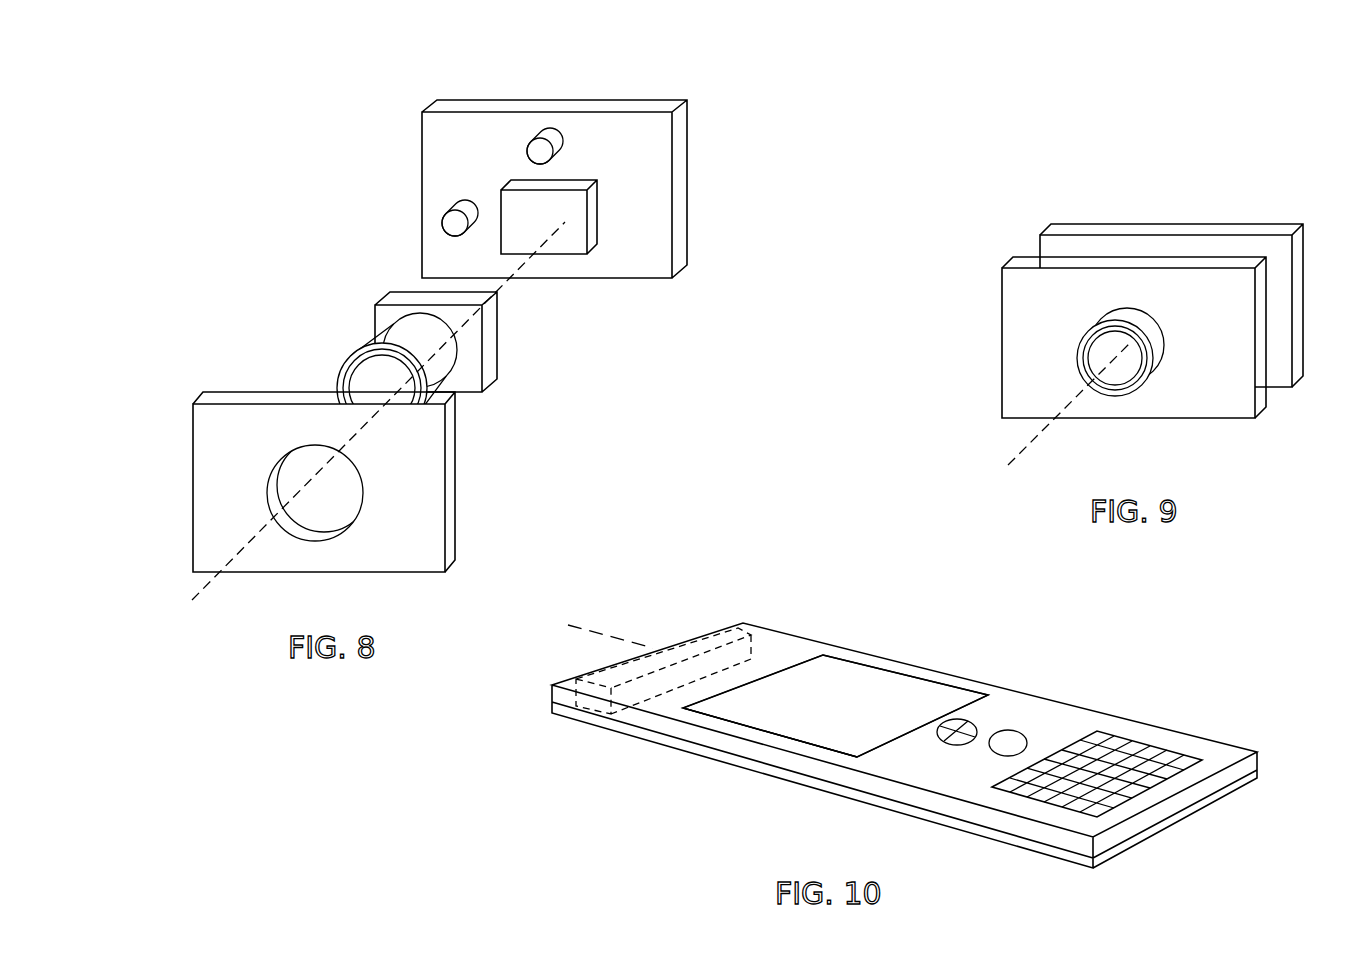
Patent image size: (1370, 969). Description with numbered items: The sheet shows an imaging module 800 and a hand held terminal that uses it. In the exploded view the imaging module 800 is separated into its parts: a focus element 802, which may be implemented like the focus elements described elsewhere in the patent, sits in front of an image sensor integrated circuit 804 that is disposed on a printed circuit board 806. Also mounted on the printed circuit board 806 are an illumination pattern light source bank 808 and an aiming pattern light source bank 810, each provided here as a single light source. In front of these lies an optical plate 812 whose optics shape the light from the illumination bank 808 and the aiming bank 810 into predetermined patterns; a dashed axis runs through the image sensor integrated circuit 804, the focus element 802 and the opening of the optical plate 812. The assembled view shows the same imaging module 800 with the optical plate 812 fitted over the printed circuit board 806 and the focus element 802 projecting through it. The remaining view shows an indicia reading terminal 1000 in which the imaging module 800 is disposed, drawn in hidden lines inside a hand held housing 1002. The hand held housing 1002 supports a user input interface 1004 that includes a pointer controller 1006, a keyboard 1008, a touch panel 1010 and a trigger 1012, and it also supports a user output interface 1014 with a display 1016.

In FIG. 8, the imaging module 800 is at (681, 63).
In FIG. 9, the imaging module 800 is at (1217, 166).
In FIG. 10, the imaging module 800 is at (706, 642).
In FIG. 8, the focus element 802 is at (318, 314).
In FIG. 9, the focus element 802 is at (1134, 404).
In FIG. 8, the image sensor integrated circuit 804 is at (594, 240).
In FIG. 8, the printed circuit board 806 is at (668, 198).
In FIG. 9, the printed circuit board 806 is at (1088, 245).
In FIG. 8, the illumination pattern light source bank 808 is at (452, 208).
In FIG. 8, the aiming pattern light source bank 810 is at (541, 130).
In FIG. 8, the optical plate 812 is at (440, 549).
In FIG. 9, the optical plate 812 is at (1030, 278).
In FIG. 10, the indicia reading terminal 1000 is at (832, 602).
In FIG. 10, the hand held housing 1002 is at (1230, 752).
In FIG. 10, the user input interface 1004 is at (903, 770).
In FIG. 10, the pointer controller 1006 is at (976, 722).
In FIG. 10, the keyboard 1008 is at (1140, 740).
In FIG. 10, the touch panel 1010 is at (883, 668).
In FIG. 10, the trigger 1012 is at (1026, 735).
In FIG. 10, the user output interface 1014 is at (700, 715).
In FIG. 10, the display 1016 is at (835, 706).